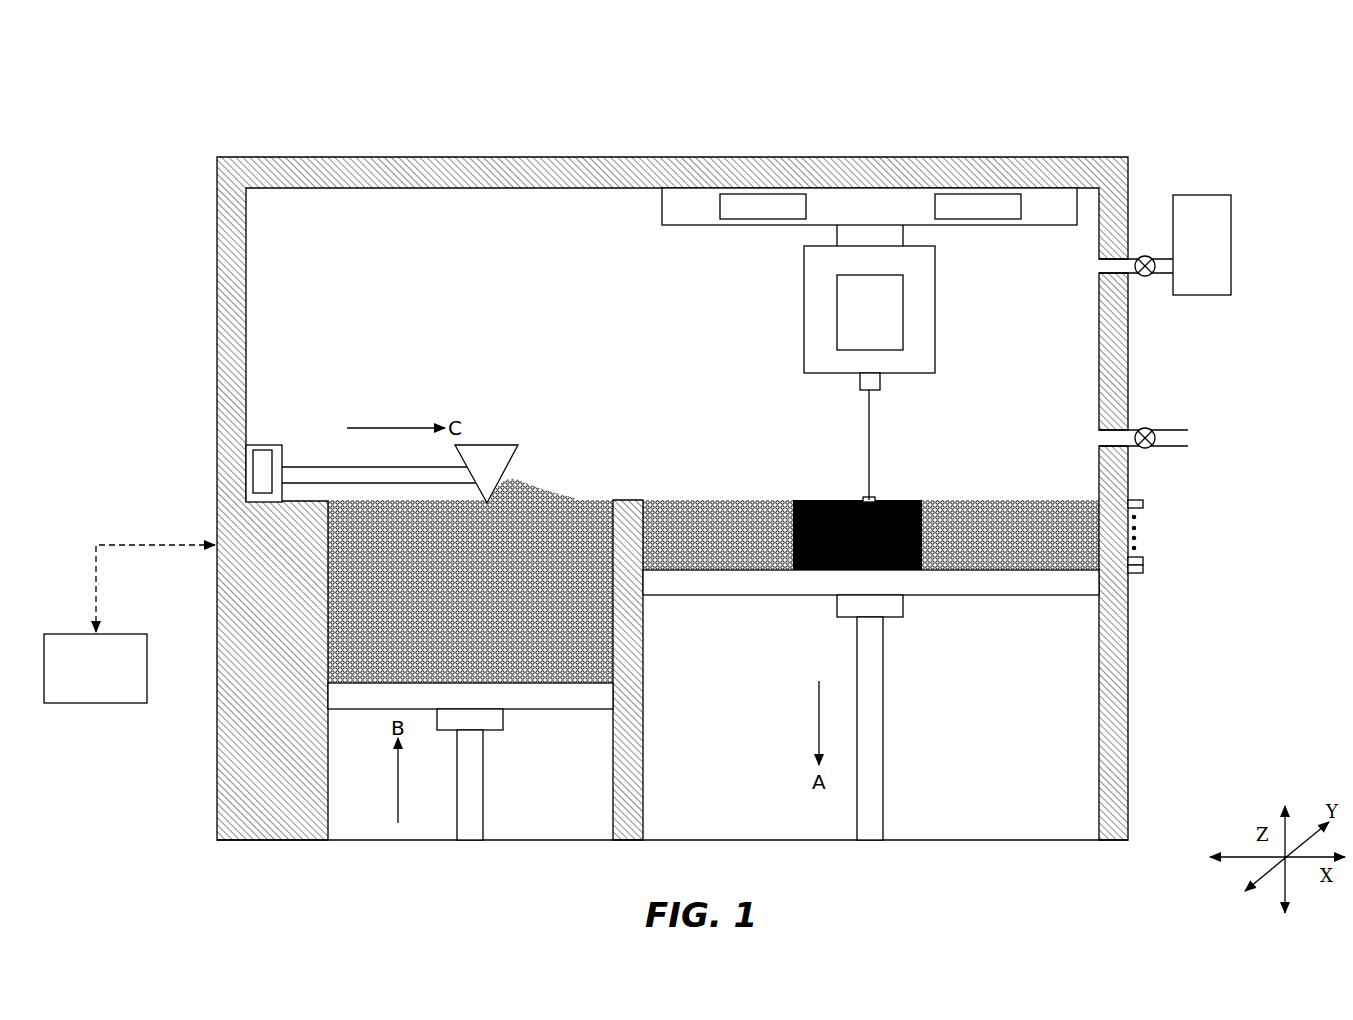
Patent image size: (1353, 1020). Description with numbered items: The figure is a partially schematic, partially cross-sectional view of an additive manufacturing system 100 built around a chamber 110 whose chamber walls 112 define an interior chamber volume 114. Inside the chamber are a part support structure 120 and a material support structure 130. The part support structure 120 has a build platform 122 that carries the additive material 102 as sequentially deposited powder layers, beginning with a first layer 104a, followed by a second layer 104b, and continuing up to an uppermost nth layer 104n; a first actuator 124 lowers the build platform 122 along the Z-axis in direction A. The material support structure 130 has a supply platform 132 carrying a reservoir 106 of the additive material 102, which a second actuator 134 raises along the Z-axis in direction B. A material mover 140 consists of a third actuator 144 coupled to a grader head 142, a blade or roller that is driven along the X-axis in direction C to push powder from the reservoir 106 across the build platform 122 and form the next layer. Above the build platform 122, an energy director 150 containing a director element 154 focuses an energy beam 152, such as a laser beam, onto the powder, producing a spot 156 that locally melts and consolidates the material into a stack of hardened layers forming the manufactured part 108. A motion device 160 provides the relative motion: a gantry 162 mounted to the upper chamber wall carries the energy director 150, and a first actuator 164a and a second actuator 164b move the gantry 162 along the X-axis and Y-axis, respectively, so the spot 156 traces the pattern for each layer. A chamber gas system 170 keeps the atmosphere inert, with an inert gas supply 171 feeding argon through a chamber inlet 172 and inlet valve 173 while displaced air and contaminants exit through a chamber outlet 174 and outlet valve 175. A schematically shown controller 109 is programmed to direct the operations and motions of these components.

The additive manufacturing system 100 is at (187, 163).
The additive material 102 is at (571, 492).
The first layer 104a is at (1143, 569).
The second layer 104b is at (1143, 560).
The nth layer 104n is at (1143, 504).
The reservoir 106 is at (536, 477).
The manufactured part 108 is at (910, 500).
The controller 109 is at (129, 624).
The chamber 110 is at (235, 333).
The chamber walls 112 is at (1073, 167).
The chamber volume 114 is at (410, 250).
The part support structure 120 is at (913, 647).
The build platform 122 is at (740, 597).
The first actuator 124 is at (893, 612).
The material support structure 130 is at (497, 743).
The supply platform 132 is at (582, 700).
The second actuator 134 is at (490, 725).
The material mover 140 is at (300, 447).
The grader head 142 is at (487, 453).
The third actuator 144 is at (262, 445).
The energy director 150 is at (804, 313).
The energy beam 152 is at (869, 418).
The director element 154 is at (870, 312).
The spot 156 is at (864, 498).
The motion device 160 is at (728, 238).
The gantry 162 is at (662, 212).
The first actuator 164a is at (763, 206).
The second actuator 164b is at (978, 206).
The chamber gas system 170 is at (1187, 318).
The inert gas supply 171 is at (1231, 248).
The chamber inlet 172 is at (1100, 266).
The inlet valve 173 is at (1145, 277).
The chamber outlet 174 is at (1100, 438).
The outlet valve 175 is at (1145, 428).